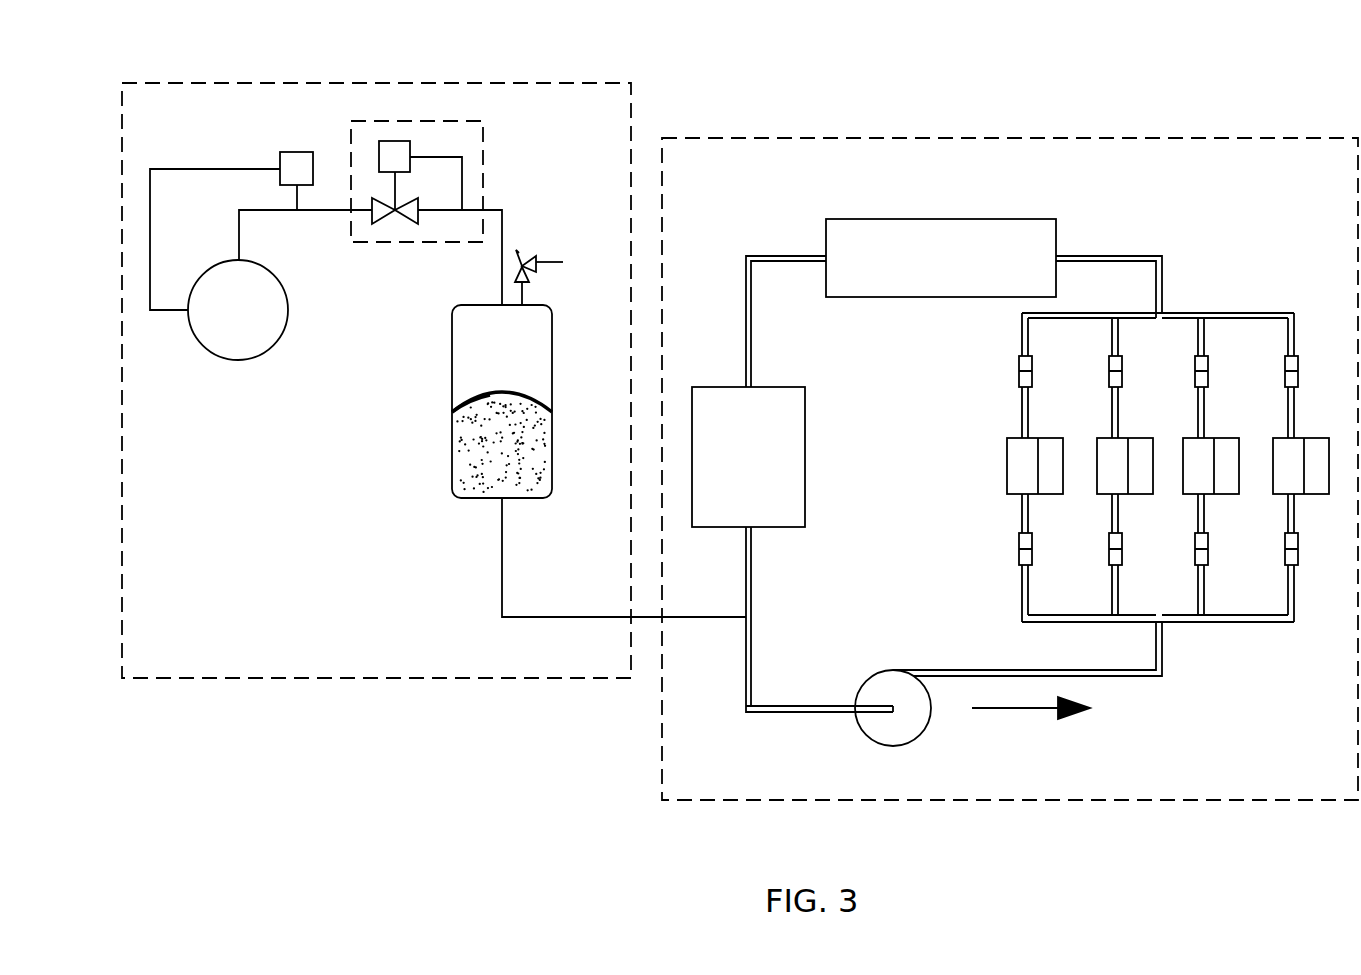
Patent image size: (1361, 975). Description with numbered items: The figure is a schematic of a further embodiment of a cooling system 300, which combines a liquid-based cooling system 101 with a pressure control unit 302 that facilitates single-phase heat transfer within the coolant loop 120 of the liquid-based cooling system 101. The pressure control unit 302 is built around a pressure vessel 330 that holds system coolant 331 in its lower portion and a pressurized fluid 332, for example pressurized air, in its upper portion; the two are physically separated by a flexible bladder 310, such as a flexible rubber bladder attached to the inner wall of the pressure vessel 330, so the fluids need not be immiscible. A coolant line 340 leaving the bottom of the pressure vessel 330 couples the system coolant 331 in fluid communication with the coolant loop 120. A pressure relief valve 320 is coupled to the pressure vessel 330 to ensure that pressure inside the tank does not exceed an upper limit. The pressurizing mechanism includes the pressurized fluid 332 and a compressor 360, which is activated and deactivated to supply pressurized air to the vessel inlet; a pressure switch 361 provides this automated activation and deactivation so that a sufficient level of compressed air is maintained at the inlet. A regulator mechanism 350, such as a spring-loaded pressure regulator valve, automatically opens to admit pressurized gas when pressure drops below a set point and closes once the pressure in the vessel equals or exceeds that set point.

The cooling system 300 is at (962, 77).
The pressure control unit 302 is at (606, 79).
The liquid-based cooling system 101 is at (1194, 133).
The coolant loop 120 is at (752, 657).
The pressure switch 361 is at (292, 152).
The compressor 360 is at (240, 362).
The regulator mechanism 350 is at (483, 152).
The pressure relief valve 320 is at (528, 250).
The pressurized fluid 332 is at (468, 328).
The flexible bladder 310 is at (476, 394).
The pressure vessel 330 is at (440, 412).
The system coolant 331 is at (465, 471).
The coolant line 340 is at (502, 584).